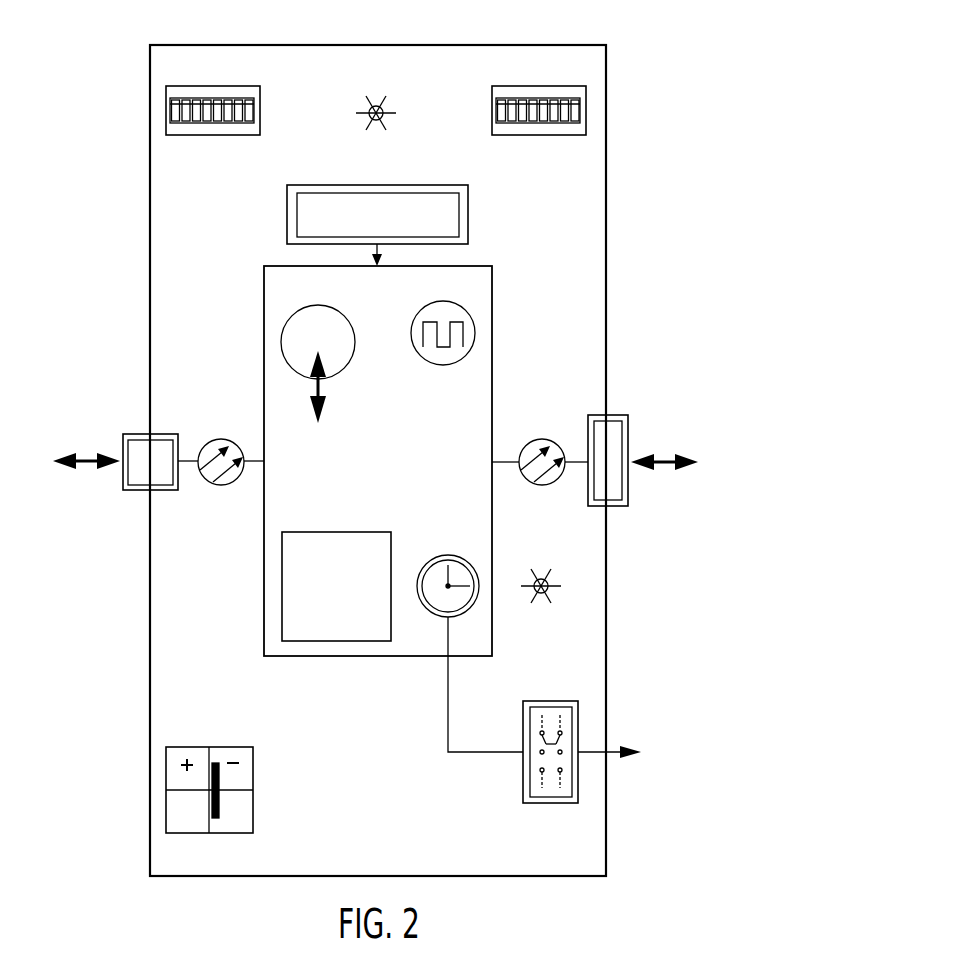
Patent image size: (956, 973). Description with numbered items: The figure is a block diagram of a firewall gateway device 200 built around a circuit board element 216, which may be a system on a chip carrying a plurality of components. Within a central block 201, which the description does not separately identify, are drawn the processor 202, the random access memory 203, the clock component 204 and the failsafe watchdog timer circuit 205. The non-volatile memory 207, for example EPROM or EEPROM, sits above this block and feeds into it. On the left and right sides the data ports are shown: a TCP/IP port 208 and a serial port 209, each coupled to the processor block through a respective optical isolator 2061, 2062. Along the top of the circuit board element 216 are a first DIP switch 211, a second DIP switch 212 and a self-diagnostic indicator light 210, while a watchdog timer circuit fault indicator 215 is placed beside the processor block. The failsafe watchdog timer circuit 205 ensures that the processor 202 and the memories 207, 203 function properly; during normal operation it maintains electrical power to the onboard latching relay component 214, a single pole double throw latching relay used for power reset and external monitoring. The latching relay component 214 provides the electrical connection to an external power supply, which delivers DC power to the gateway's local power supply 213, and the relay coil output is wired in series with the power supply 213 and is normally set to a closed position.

The firewall gateway device 200 is at (740, 73).
The controller 201 is at (351, 657).
The processor 202 is at (282, 597).
The random access memory 203 is at (290, 332).
The clock component 204 is at (472, 314).
The failsafe watchdog timer circuit 205 is at (430, 557).
The optical isolator 2061 is at (232, 440).
The optical isolator 2062 is at (555, 440).
The non-volatile memory 207 is at (468, 218).
The TCP/IP port 208 is at (138, 490).
The serial port 209 is at (628, 481).
The self-diagnostic indicator light 210 is at (384, 118).
The first dual in-line package (DIP) switch 211 is at (166, 109).
The second DIP switch 212 is at (586, 110).
The power supply 213 is at (166, 780).
The latching relay component 214 is at (545, 803).
The watchdog timer circuit fault indicator 215 is at (553, 592).
The circuit board element 216 is at (495, 45).